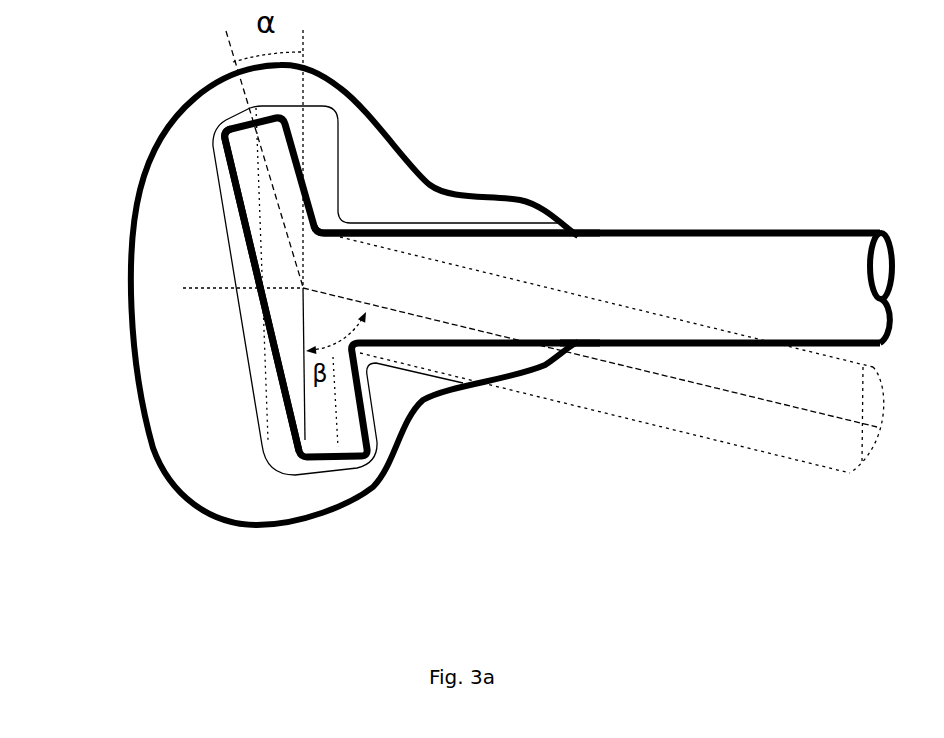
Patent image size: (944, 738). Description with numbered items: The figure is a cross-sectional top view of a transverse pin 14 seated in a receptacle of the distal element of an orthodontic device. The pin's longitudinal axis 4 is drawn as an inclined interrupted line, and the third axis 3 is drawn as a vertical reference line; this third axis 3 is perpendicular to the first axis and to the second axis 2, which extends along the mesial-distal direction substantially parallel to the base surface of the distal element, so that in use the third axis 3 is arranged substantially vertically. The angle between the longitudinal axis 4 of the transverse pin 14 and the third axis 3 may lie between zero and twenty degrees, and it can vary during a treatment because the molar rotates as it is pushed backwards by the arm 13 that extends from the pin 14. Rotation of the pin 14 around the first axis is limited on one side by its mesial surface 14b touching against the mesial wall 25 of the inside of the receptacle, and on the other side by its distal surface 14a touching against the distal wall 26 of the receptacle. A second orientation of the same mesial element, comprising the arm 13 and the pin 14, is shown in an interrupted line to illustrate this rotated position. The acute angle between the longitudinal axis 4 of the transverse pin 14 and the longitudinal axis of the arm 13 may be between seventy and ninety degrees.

The second axis 2 is at (354, 295).
The third axis 3 is at (317, 235).
The longitudinal axis of the transverse pin 4 is at (254, 159).
The arm 13 is at (728, 293).
The transverse pin 14 is at (244, 184).
The distal surface 14a is at (243, 256).
The mesial surface 14b is at (312, 206).
The mesial wall 25 is at (335, 172).
The distal wall 26 is at (268, 452).